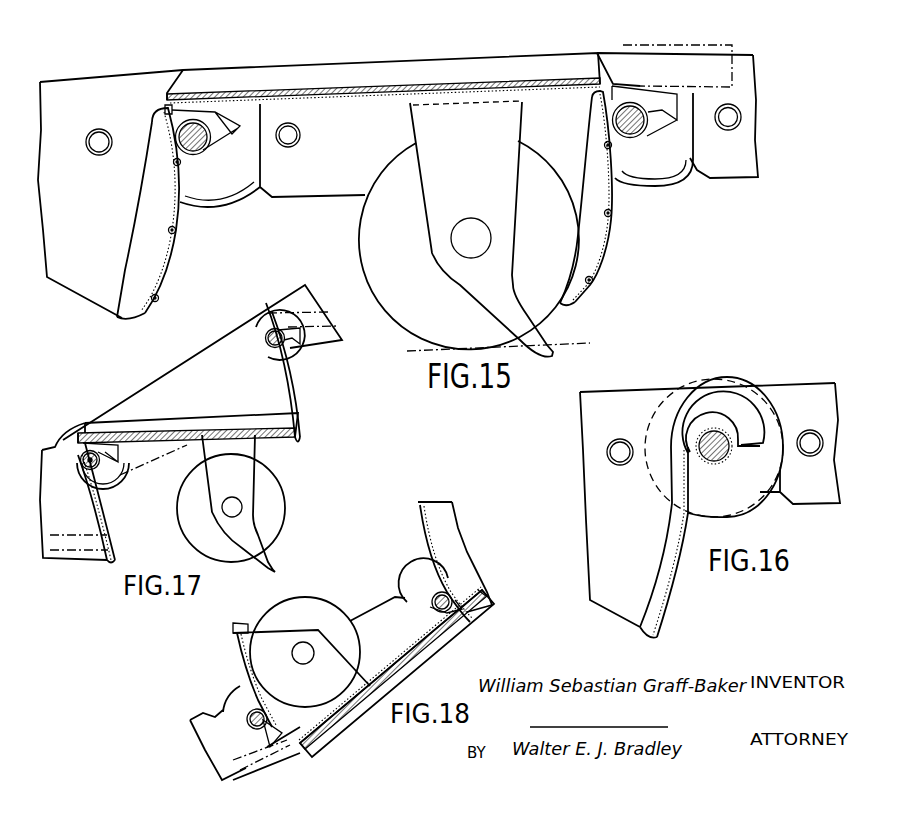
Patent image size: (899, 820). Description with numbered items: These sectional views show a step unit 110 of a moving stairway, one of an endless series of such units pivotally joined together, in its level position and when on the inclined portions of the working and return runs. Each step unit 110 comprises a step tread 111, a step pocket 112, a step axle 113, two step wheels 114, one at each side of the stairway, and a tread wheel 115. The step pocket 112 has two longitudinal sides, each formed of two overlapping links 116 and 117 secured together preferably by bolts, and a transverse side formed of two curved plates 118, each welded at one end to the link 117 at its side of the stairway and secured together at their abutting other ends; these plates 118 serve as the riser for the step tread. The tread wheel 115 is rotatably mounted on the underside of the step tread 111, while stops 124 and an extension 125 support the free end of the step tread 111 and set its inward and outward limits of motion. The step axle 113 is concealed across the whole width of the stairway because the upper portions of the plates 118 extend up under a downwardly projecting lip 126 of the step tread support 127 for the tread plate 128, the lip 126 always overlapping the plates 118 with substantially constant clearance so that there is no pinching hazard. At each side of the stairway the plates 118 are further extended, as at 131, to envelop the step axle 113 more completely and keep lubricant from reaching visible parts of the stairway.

In FIG. 15, the step unit 110 is at (364, 50).
In FIG. 17, the step unit 110 is at (161, 355).
In FIG. 18, the step unit 110 is at (361, 571).
In FIG. 15, the step tread 111 is at (243, 71).
In FIG. 17, the step tread 111 is at (172, 420).
In FIG. 18, the step tread 111 is at (423, 668).
In FIG. 15, the step pocket 112 is at (80, 203).
In FIG. 17, the step pocket 112 is at (199, 391).
In FIG. 18, the step pocket 112 is at (365, 652).
In FIG. 16, the step pocket 112 is at (599, 558).
In FIG. 15, the step axle 113 is at (205, 153).
In FIG. 17, the step axle 113 is at (118, 476).
In FIG. 18, the step axle 113 is at (444, 595).
In FIG. 16, the step axle 113 is at (714, 464).
In FIG. 15, the step wheel 114 is at (201, 210).
In FIG. 17, the step wheel 114 is at (83, 422).
In FIG. 18, the step wheel 114 is at (416, 578).
In FIG. 16, the step wheel 114 is at (705, 378).
In FIG. 15, the tread wheel 115 is at (359, 247).
In FIG. 17, the tread wheel 115 is at (285, 507).
In FIG. 18, the tread wheel 115 is at (322, 600).
In FIG. 15, the link 116 is at (251, 190).
In FIG. 17, the link 116 is at (128, 463).
In FIG. 16, the link 116 is at (775, 494).
In FIG. 15, the link 117 is at (227, 202).
In FIG. 17, the link 117 is at (145, 387).
In FIG. 16, the link 117 is at (622, 390).
In FIG. 15, the curved plate 118 is at (158, 268).
In FIG. 17, the curved plate 118 is at (292, 393).
In FIG. 18, the curved plate 118 is at (240, 663).
In FIG. 16, the curved plate 118 is at (678, 601).
In FIG. 15, the stop 124 is at (122, 320).
In FIG. 17, the stop 124 is at (295, 445).
In FIG. 15, the extension 125 is at (546, 355).
In FIG. 17, the extension 125 is at (273, 567).
In FIG. 18, the extension 125 is at (240, 623).
In FIG. 15, the lip 126 is at (165, 109).
In FIG. 17, the lip 126 is at (82, 450).
In FIG. 18, the lip 126 is at (483, 592).
In FIG. 15, the step tread support 127 is at (363, 100).
In FIG. 15, the tread plate 128 is at (445, 78).
In FIG. 16, the extended portion of plates 131 is at (730, 423).